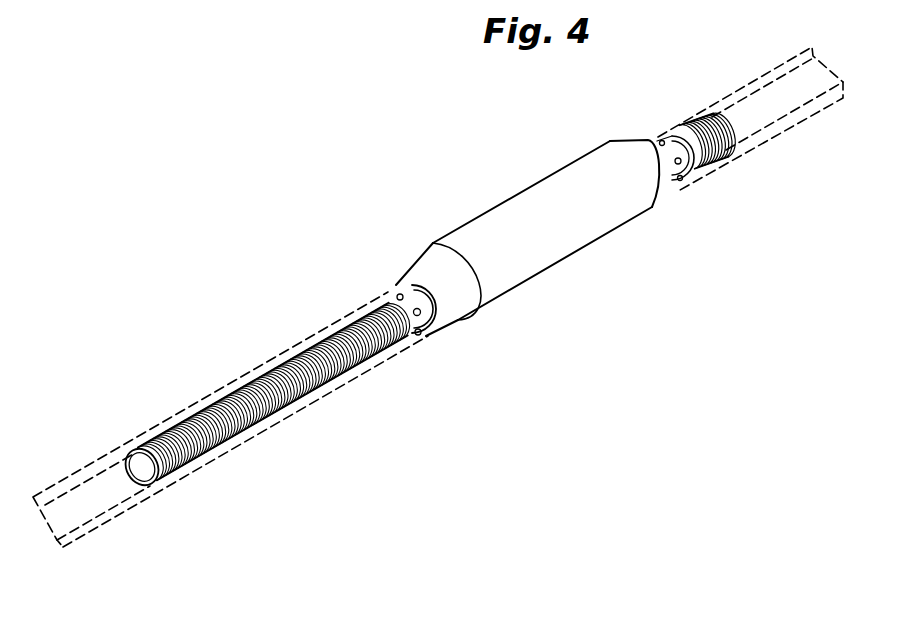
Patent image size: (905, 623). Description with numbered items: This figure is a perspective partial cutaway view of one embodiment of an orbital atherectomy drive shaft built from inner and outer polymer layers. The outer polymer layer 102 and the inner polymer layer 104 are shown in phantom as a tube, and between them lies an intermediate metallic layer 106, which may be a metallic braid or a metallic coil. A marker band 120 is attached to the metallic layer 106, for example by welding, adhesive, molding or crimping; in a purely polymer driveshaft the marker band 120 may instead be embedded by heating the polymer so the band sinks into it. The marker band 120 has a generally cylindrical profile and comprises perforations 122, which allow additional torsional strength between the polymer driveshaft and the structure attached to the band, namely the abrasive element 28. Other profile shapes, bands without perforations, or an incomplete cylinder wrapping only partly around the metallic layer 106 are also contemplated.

The abrasive element 28 is at (550, 254).
The outer polymer layer 102 is at (100, 457).
The inner polymer layer 104 is at (788, 104).
The metallic layer 106 is at (238, 427).
The marker band 120 is at (398, 296).
The perforations 122 is at (420, 311).